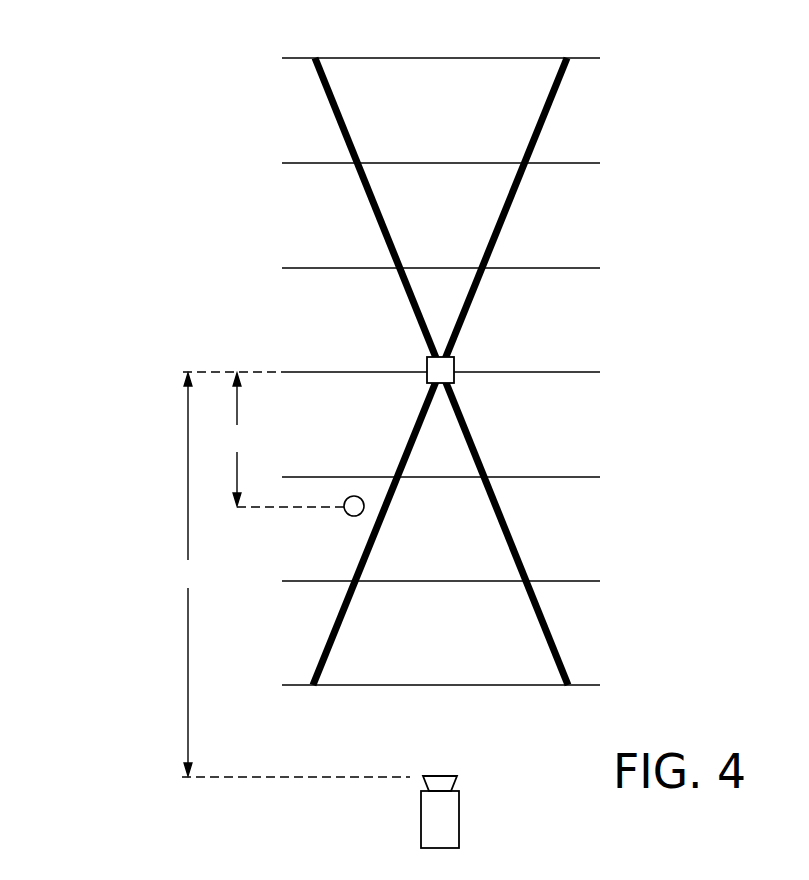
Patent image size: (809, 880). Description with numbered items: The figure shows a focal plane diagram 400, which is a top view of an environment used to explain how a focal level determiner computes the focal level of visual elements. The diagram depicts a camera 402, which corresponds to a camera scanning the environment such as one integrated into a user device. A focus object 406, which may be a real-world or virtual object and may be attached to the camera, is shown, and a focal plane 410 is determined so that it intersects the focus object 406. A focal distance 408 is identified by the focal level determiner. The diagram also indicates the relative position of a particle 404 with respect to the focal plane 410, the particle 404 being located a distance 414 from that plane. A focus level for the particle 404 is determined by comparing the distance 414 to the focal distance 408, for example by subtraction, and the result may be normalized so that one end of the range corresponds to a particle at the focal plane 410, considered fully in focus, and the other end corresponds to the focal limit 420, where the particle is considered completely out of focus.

The focal plane diagram 400 is at (733, 92).
The camera 402 is at (421, 818).
The particle 404 is at (351, 516).
The focus object 406 is at (427, 364).
The focal distance 408 is at (290, 575).
The focal plane 410 is at (220, 371).
The distance 414 is at (236, 439).
The focal limit 420 is at (333, 57).